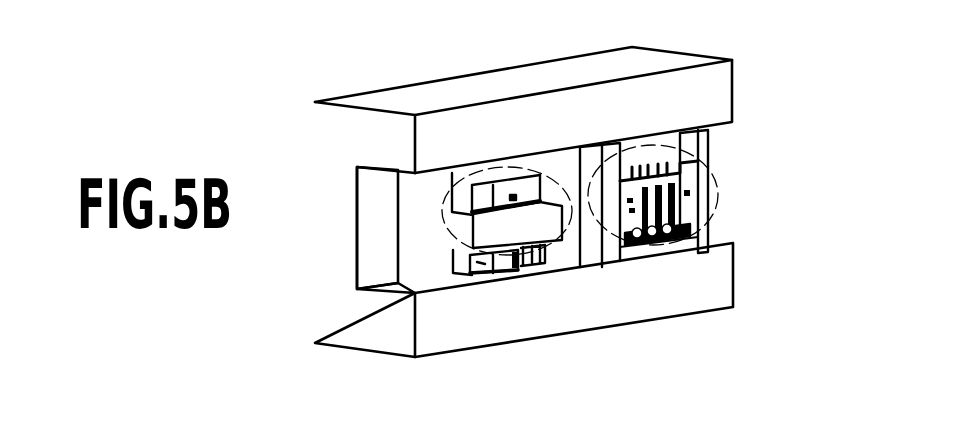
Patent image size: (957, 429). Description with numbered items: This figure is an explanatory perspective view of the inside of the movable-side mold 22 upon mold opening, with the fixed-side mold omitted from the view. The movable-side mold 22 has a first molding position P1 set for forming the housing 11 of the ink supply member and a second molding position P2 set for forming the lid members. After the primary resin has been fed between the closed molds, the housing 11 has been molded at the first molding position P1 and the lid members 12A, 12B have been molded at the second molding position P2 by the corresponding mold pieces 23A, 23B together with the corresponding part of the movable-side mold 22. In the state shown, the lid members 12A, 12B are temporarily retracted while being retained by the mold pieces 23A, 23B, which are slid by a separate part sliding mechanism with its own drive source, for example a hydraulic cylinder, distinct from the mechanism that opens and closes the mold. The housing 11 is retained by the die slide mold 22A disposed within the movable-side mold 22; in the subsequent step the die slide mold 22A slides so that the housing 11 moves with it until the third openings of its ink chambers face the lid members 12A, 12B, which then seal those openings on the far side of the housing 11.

The movable-side mold 22 is at (340, 137).
The die slide mold 22A is at (415, 233).
The mold piece 23A is at (511, 188).
The lid member 12A is at (548, 187).
The mold piece 23B is at (500, 263).
The lid member 12B is at (528, 265).
The housing 11 is at (705, 237).
The first molding position P1 is at (722, 155).
The second molding position P2 is at (463, 175).